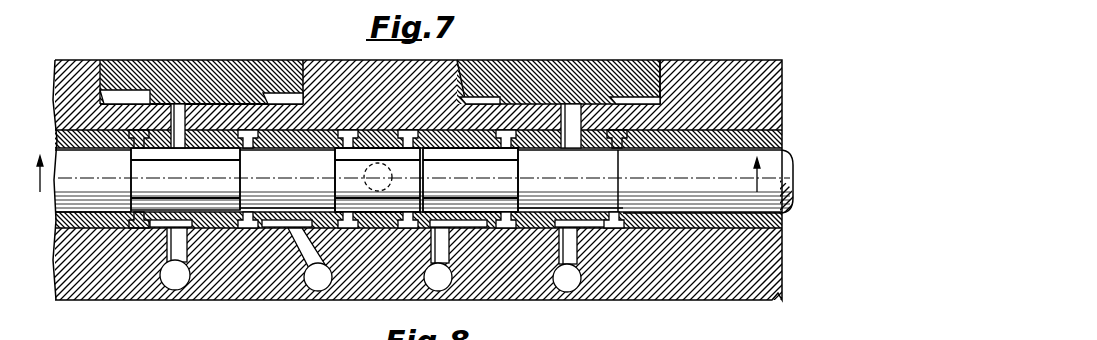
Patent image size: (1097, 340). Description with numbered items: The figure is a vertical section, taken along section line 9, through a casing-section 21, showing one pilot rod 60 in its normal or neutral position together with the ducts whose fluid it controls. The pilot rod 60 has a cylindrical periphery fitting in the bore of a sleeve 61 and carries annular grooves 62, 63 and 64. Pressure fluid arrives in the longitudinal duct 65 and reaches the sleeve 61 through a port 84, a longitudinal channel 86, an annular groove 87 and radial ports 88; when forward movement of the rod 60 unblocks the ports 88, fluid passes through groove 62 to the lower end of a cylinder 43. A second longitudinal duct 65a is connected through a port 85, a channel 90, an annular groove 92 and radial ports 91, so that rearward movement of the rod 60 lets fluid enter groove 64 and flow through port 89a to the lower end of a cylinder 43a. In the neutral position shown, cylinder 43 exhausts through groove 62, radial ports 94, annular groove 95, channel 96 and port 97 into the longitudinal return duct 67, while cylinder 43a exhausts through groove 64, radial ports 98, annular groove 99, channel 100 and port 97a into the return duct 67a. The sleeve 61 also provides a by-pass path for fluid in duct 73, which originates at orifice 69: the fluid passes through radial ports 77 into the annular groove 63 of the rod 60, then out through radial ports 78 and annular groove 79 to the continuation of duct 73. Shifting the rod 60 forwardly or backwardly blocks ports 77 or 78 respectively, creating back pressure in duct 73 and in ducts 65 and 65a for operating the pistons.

The section line 9 is at (37, 178).
The casing-section 21 is at (56, 276).
The cylinder 43 is at (304, 62).
The cylinder 43a is at (662, 62).
The pilot rod 60 is at (540, 170).
The sleeve 61 is at (713, 130).
The annular groove 62 is at (217, 207).
The annular groove 63 is at (385, 210).
The annular groove 64 is at (513, 228).
The duct 65 is at (317, 282).
The duct 65a is at (448, 290).
The longitudinal duct 67 is at (172, 286).
The longitudinally extending duct 67a is at (569, 290).
The orifice 69 is at (186, 102).
The duct 73 is at (365, 176).
The radial ports 77 is at (350, 130).
The radial ports 78 is at (465, 62).
The annular groove 79 is at (410, 130).
The port 84 is at (290, 232).
The port 85 is at (436, 250).
The longitudinal channel 86 is at (266, 232).
The annular groove 87 is at (256, 134).
The radial ports 88 is at (300, 94).
The port 89a is at (600, 102).
The longitudinal channel 90 is at (477, 224).
The radial ports 91 is at (505, 210).
The annular groove 92 is at (512, 132).
The radial ports 94 is at (138, 130).
The annular groove 95 is at (178, 126).
The longitudinally extending channel 96 is at (158, 226).
The port 97 is at (160, 268).
The port 97a is at (573, 254).
The radial ports 98 is at (626, 213).
The annular groove 99 is at (623, 228).
The longitudinal channel 100 is at (603, 230).